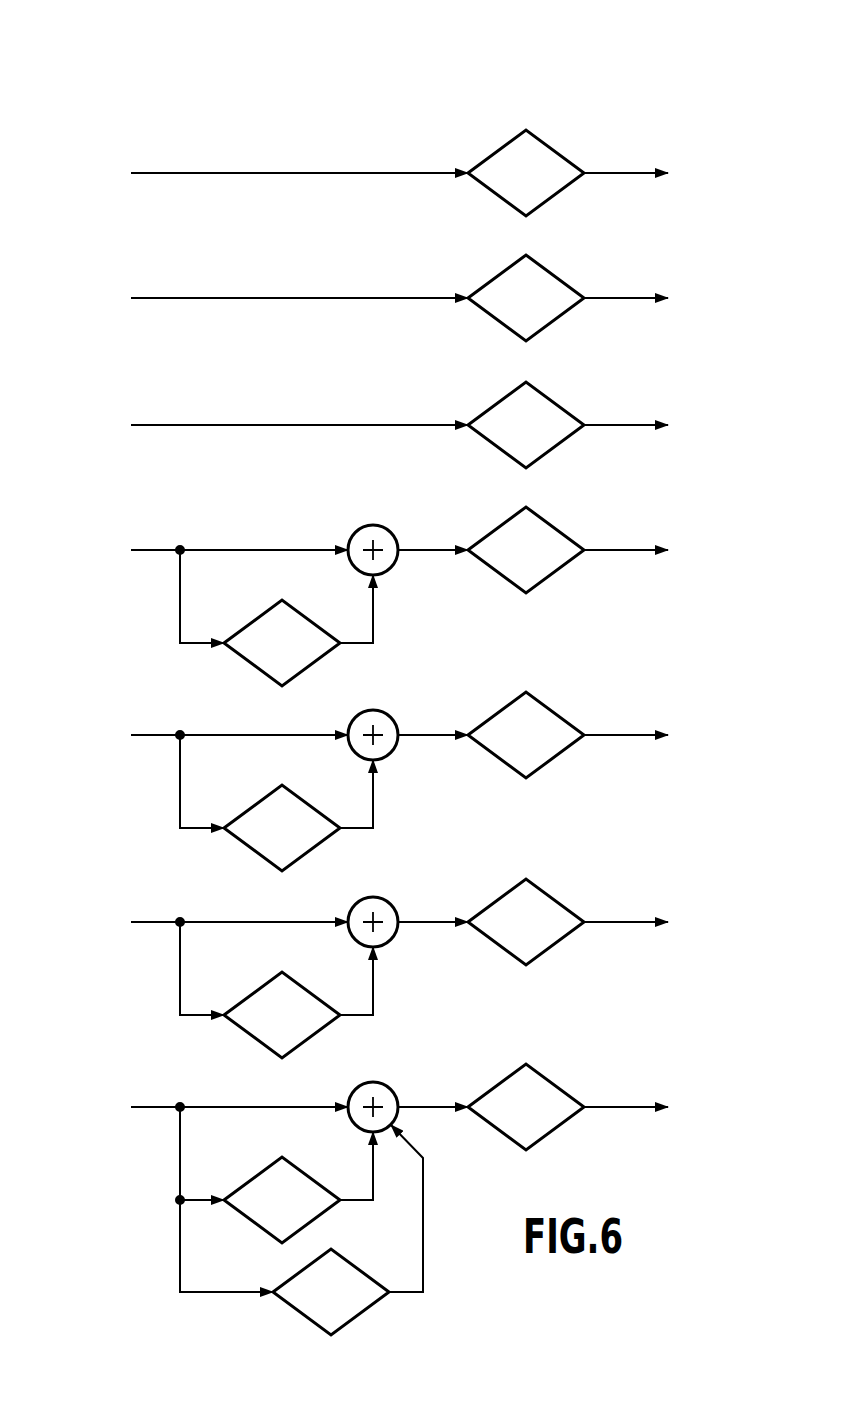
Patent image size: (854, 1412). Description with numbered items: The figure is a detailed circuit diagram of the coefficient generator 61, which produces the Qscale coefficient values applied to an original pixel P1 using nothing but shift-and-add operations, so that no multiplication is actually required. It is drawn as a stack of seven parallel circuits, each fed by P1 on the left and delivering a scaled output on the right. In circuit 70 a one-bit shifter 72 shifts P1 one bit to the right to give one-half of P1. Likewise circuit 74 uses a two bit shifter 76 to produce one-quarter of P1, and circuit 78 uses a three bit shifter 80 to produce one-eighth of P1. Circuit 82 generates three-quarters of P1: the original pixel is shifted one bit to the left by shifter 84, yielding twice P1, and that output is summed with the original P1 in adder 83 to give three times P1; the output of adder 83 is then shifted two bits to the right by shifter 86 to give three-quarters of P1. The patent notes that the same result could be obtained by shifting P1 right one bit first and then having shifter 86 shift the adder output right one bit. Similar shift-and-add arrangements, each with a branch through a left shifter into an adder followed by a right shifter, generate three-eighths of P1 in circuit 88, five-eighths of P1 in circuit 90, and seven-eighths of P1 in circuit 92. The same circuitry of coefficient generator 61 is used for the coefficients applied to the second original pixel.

The coefficient generator 61 is at (280, 85).
The circuit 70 is at (153, 128).
The one-bit shifter 72 is at (560, 156).
The circuit 74 is at (153, 253).
The two bit shifter 76 is at (560, 281).
The circuit 78 is at (153, 379).
The three bit shifter 80 is at (560, 408).
The circuit 82 is at (153, 505).
The adder 83 is at (375, 523).
The shifter 84 is at (319, 626).
The shifter 86 is at (560, 533).
The circuit 88 is at (153, 699).
The circuit 90 is at (153, 886).
The circuit 92 is at (153, 1073).